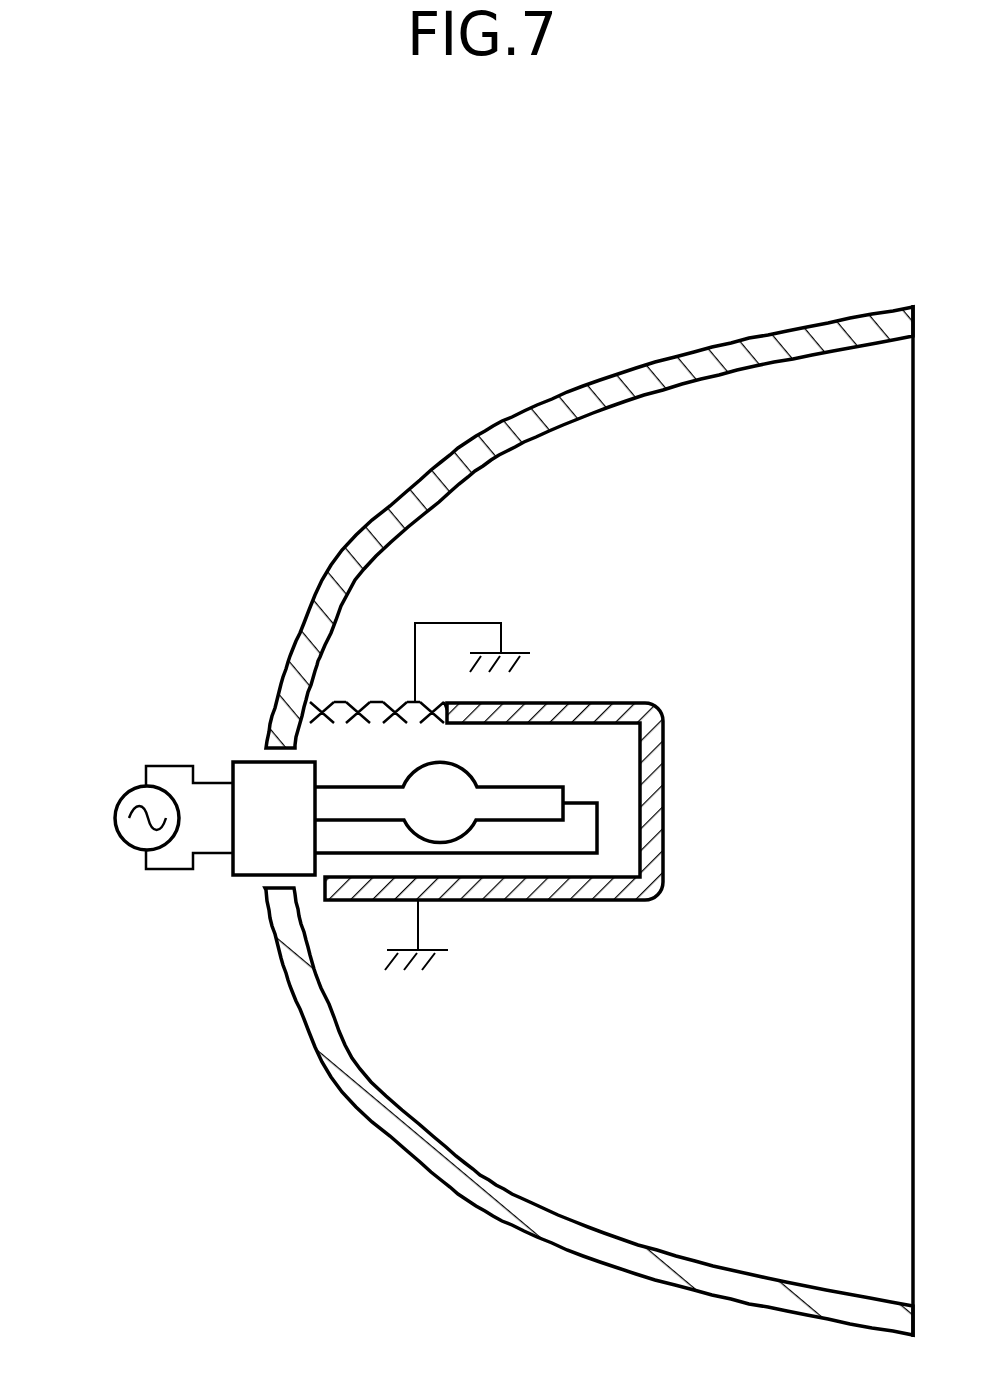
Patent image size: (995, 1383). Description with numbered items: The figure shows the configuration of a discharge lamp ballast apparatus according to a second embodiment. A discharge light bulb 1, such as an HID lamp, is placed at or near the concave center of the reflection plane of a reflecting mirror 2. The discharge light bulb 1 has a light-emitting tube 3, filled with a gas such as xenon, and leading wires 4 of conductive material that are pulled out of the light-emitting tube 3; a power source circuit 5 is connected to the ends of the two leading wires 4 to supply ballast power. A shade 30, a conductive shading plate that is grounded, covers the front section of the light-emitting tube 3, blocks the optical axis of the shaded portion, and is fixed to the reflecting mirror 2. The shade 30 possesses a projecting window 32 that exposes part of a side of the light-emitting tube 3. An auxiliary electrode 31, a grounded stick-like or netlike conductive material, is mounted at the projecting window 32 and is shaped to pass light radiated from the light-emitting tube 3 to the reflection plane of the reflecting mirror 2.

The discharge light bulb 1 is at (245, 754).
The reflecting mirror 2 is at (470, 440).
The light-emitting tube 3 is at (507, 785).
The leading wires 4 is at (588, 802).
The power source circuit 5 is at (117, 818).
The shade 30 is at (620, 702).
The auxiliary electrode 31 is at (342, 700).
The projecting window 32 is at (384, 688).